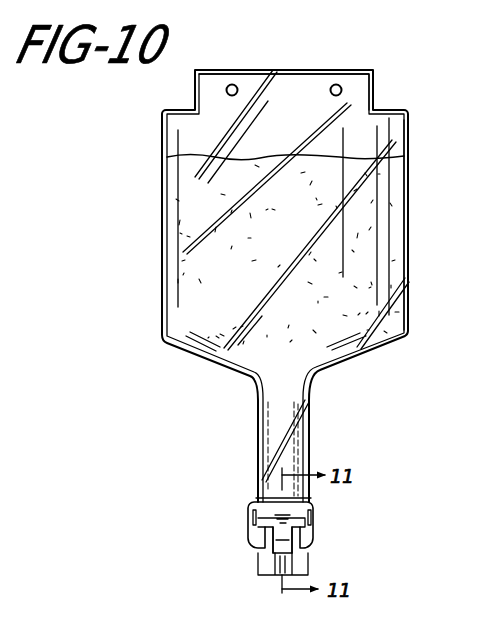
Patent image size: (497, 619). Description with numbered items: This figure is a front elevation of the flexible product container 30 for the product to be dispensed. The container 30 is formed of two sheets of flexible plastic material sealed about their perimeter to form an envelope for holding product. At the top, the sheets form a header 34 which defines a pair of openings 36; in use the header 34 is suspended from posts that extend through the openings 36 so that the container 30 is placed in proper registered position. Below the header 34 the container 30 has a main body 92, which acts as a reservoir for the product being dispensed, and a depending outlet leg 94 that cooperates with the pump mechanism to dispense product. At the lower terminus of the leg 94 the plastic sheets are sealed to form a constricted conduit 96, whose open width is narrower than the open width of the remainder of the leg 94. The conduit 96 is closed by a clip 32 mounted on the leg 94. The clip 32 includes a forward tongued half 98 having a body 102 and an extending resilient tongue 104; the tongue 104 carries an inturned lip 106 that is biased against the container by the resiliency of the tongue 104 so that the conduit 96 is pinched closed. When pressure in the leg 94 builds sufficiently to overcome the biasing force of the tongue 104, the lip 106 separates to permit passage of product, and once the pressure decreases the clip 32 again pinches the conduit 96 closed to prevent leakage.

The product container 30 is at (410, 152).
The clip 32 is at (317, 525).
The header 34 is at (363, 91).
The openings 36 is at (239, 84).
The main body 92 is at (383, 234).
The outlet leg 94 is at (290, 437).
The constricted conduit 96 is at (285, 562).
The tongued half 98 is at (263, 498).
The body 102 is at (314, 503).
The resilient tongue 104 is at (282, 535).
The inturned lip 106 is at (252, 517).